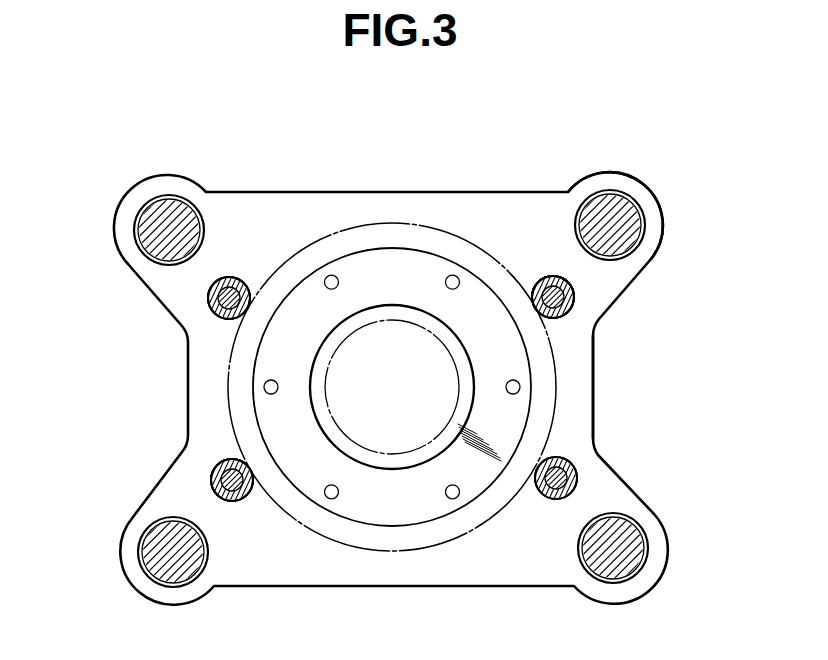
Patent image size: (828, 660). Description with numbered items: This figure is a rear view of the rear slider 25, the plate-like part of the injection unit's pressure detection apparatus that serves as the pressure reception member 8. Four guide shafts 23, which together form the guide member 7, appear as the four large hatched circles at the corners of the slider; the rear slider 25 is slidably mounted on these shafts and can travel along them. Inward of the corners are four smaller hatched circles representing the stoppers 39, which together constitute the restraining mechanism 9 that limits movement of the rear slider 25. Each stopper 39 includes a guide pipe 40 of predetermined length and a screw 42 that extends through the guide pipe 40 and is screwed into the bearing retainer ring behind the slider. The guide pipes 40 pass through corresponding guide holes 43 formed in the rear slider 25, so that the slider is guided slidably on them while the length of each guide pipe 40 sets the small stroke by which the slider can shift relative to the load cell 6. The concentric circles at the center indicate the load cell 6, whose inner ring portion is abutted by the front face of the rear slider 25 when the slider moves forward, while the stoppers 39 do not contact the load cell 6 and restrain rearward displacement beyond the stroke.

The load cell 6 is at (384, 223).
The guide member 7 is at (648, 225).
The pressure reception member 8 is at (594, 420).
The restraining mechanism 9 is at (587, 300).
The guide shafts 23 is at (138, 222).
The rear slider 25 is at (520, 192).
The stoppers 39 is at (535, 270).
The guide pipe 40 is at (570, 283).
The screw 42 is at (229, 277).
The guide holes 43 is at (250, 292).